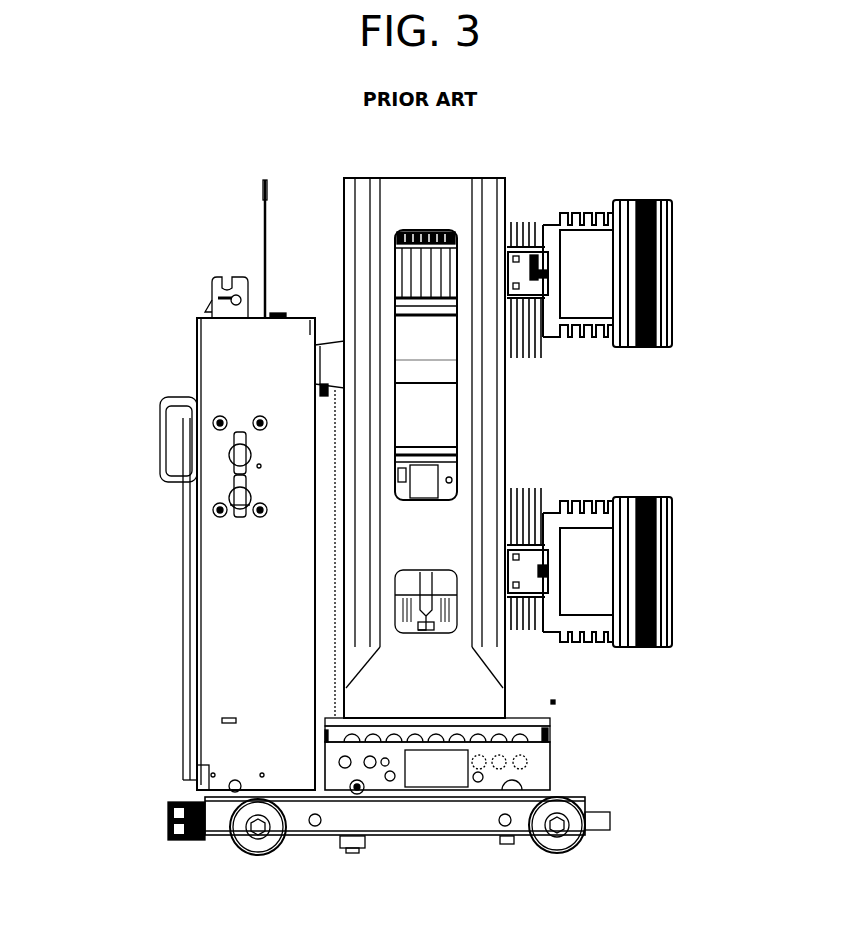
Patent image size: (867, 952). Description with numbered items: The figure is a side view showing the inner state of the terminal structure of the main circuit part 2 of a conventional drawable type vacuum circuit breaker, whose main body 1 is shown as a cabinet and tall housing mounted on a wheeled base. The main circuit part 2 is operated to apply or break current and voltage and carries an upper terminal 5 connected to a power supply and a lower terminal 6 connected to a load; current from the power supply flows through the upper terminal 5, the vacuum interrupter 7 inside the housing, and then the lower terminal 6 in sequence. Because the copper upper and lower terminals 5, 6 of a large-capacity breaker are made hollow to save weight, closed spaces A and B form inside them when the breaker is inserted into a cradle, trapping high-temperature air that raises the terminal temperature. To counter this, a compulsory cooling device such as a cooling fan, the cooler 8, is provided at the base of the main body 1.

The main body 1 is at (58, 195).
The main circuit part 2 is at (465, 362).
The upper terminal 5 is at (578, 208).
The lower terminal 6 is at (580, 504).
The vacuum interrupter 7 is at (440, 425).
The cooler 8 is at (455, 763).
The closed space A is at (590, 270).
The closed space B is at (597, 570).